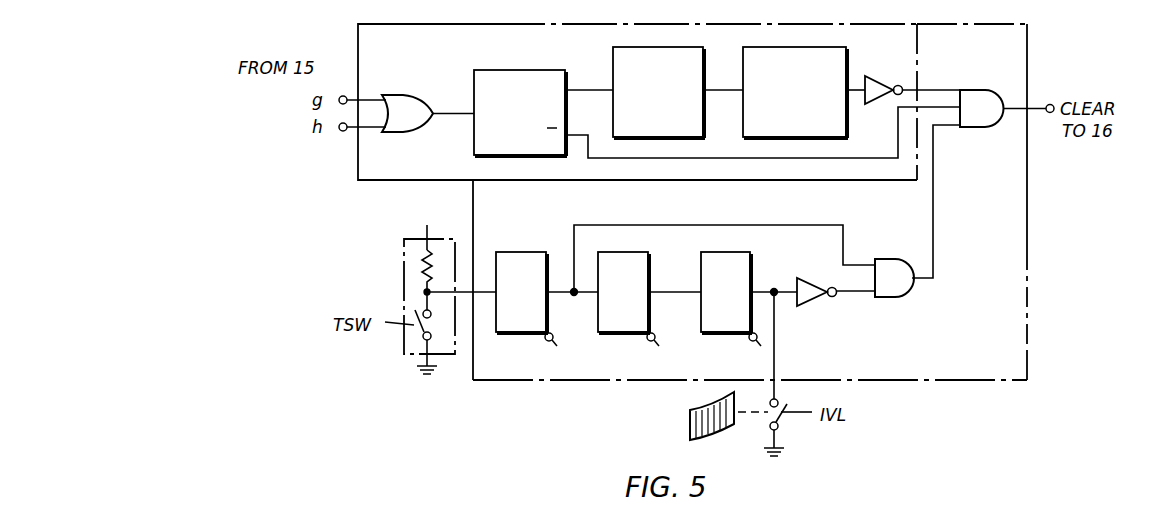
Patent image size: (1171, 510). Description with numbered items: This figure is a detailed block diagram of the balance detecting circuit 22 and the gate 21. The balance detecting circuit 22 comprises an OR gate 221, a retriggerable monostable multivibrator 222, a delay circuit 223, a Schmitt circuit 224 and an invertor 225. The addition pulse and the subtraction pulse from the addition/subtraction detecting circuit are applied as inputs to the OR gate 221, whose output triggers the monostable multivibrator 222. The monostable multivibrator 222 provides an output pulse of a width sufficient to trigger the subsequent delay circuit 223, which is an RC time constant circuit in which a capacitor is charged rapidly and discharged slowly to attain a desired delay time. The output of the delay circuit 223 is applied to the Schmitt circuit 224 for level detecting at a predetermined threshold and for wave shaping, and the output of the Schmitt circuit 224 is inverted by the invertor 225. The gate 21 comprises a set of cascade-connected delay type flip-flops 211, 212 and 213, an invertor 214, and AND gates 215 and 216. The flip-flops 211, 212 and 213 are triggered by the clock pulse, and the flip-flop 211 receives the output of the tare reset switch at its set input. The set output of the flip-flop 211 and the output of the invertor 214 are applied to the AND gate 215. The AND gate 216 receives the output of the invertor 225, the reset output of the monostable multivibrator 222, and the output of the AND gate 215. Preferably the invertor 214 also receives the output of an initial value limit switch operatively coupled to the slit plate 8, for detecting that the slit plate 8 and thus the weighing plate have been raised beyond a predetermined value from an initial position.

The slit plate 8 is at (690, 420).
The gate 21 is at (975, 373).
The balance detecting circuit 22 is at (885, 36).
The delay type flip-flop 211 is at (506, 336).
The delay type flip-flop 212 is at (608, 336).
The delay type flip-flop 213 is at (710, 336).
The invertor 214 is at (814, 300).
The AND gate 215 is at (906, 300).
The AND gate 216 is at (970, 88).
The OR gate 221 is at (400, 94).
The retriggerable monostable multivibrator 222 is at (507, 69).
The delay circuit 223 is at (643, 46).
The Schmitt circuit 224 is at (802, 46).
The invertor 225 is at (879, 80).